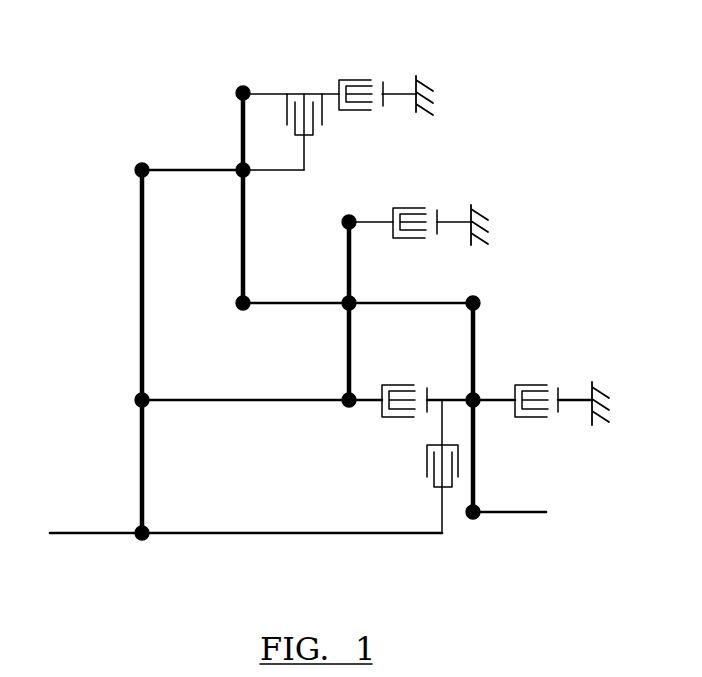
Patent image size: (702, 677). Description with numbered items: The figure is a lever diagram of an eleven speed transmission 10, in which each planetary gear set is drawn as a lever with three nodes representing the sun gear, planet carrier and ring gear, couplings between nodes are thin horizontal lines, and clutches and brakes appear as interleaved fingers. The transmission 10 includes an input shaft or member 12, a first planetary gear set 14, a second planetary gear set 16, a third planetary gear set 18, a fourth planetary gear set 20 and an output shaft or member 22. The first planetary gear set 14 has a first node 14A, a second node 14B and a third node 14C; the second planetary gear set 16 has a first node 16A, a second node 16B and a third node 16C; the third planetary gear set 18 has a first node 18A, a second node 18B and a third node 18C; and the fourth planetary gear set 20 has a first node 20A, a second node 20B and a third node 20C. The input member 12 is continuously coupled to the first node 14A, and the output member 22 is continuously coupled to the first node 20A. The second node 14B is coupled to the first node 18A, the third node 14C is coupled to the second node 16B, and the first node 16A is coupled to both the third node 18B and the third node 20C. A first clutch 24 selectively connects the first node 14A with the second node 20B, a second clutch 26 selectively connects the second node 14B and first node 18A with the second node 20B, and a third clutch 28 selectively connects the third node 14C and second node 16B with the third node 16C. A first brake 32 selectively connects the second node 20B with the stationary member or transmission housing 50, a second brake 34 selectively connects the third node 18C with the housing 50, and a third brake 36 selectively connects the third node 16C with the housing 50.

The eleven speed transmission 10 is at (554, 118).
The input shaft or member 12 is at (82, 537).
The first planetary gear set 14 is at (183, 540).
The first node of the first planetary gear set 14A is at (142, 540).
The second node of the first planetary gear set 14B is at (137, 399).
The third node of the first planetary gear set 14C is at (137, 169).
The second planetary gear set 16 is at (259, 319).
The first node of the second planetary gear set 16A is at (238, 302).
The second node of the second planetary gear set 16B is at (240, 177).
The third node of the second planetary gear set 16C is at (240, 93).
The third planetary gear set 18 is at (311, 376).
The first node of the third planetary gear set 18A is at (350, 405).
The second node of the third planetary gear set 18B is at (347, 300).
The third node of the third planetary gear set 18C is at (345, 222).
The fourth planetary gear set 20 is at (487, 531).
The first node of the fourth planetary gear set 20A is at (473, 519).
The second node of the fourth planetary gear set 20B is at (470, 397).
The third node of the fourth planetary gear set 20C is at (477, 302).
The output shaft or member 22 is at (525, 515).
The first clutch 24 is at (427, 470).
The second clutch 26 is at (400, 418).
The third clutch 28 is at (323, 118).
The first brake 32 is at (538, 385).
The second brake 34 is at (418, 207).
The third brake 36 is at (363, 80).
The stationary member or transmission housing 50 is at (420, 78).